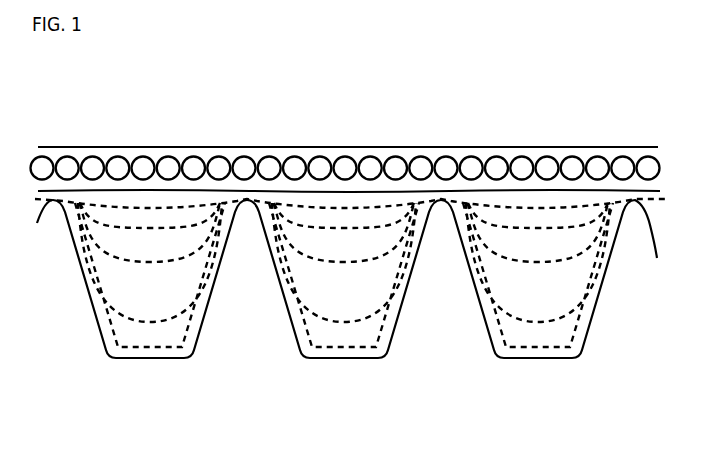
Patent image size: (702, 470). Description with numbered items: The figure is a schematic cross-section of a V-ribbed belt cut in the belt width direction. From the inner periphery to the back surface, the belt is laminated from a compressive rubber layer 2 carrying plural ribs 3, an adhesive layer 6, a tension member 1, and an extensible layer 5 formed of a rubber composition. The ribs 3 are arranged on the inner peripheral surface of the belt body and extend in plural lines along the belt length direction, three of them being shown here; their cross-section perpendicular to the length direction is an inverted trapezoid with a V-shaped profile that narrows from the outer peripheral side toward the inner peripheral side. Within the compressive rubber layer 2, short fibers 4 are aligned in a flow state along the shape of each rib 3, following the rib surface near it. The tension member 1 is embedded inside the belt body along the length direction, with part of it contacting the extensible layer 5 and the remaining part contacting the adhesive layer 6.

The tension member 1 is at (213, 160).
The compressive rubber layer 2 is at (545, 283).
The rib 3 is at (335, 360).
The short fibers 4 is at (365, 255).
The extensible layer 5 is at (332, 157).
The adhesive layer 6 is at (523, 160).